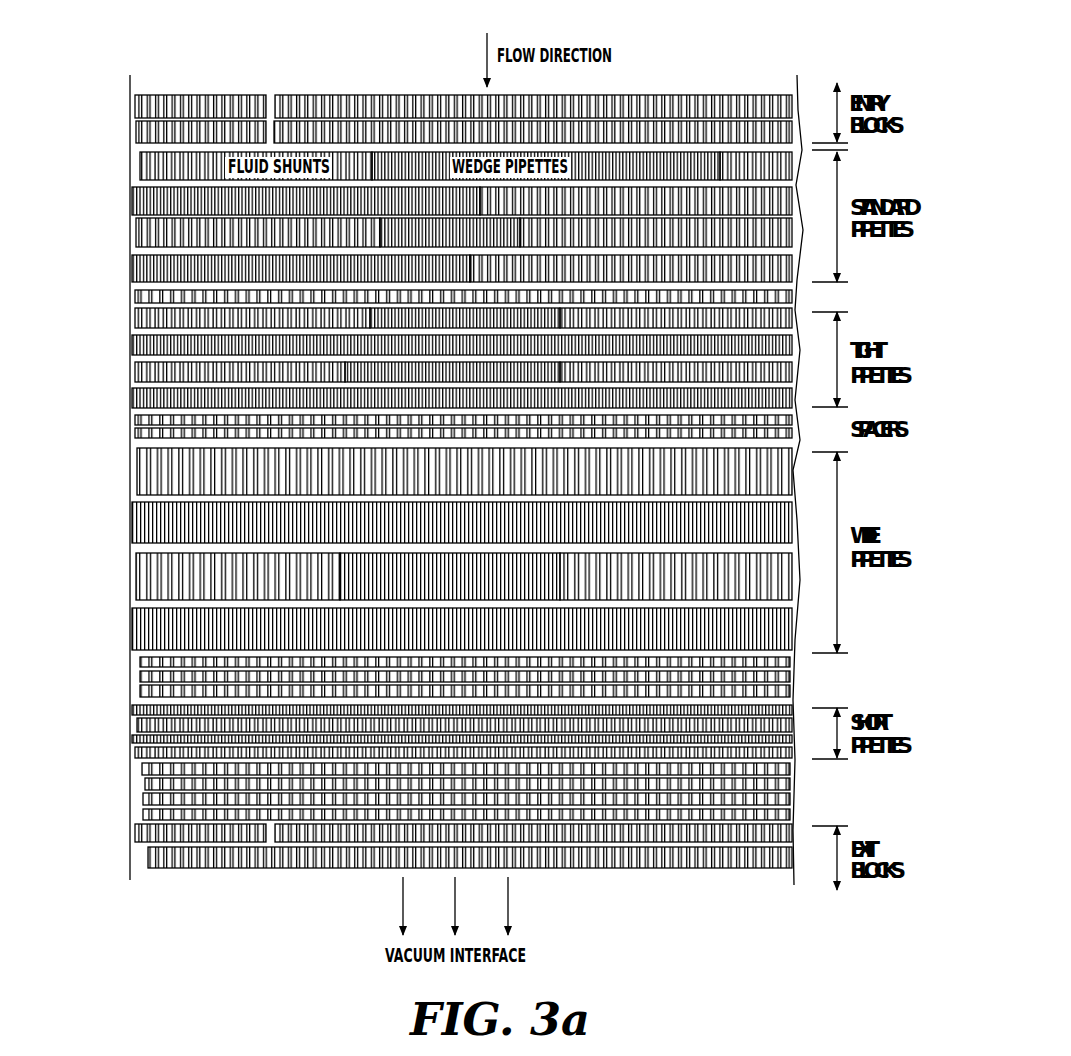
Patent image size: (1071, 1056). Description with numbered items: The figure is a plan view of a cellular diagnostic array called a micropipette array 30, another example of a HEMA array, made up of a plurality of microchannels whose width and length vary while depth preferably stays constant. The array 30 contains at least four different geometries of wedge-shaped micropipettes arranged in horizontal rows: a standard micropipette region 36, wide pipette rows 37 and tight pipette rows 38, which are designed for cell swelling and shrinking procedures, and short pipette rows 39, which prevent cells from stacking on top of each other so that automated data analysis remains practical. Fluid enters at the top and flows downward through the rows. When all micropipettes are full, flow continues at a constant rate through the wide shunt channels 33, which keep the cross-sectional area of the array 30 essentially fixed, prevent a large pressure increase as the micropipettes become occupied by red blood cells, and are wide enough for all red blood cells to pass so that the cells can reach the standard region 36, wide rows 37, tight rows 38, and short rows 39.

The micropipette array 30 is at (661, 957).
The shunt channels 33 is at (127, 470).
The standard micropipette region 36 is at (127, 200).
The wide pipette rows 37 is at (127, 634).
The tight pipette rows 38 is at (127, 346).
The short pipette rows 39 is at (127, 740).